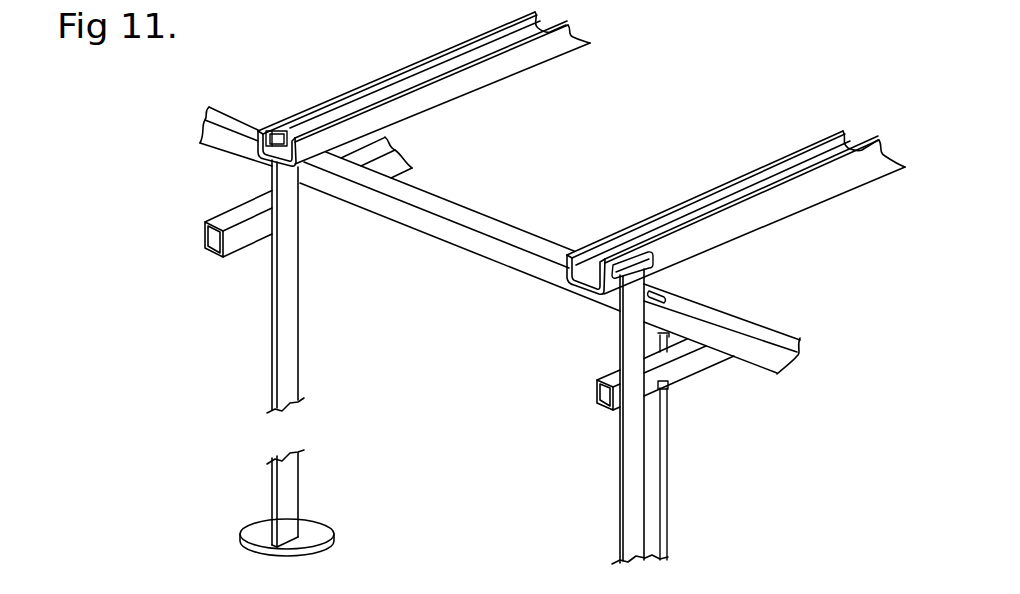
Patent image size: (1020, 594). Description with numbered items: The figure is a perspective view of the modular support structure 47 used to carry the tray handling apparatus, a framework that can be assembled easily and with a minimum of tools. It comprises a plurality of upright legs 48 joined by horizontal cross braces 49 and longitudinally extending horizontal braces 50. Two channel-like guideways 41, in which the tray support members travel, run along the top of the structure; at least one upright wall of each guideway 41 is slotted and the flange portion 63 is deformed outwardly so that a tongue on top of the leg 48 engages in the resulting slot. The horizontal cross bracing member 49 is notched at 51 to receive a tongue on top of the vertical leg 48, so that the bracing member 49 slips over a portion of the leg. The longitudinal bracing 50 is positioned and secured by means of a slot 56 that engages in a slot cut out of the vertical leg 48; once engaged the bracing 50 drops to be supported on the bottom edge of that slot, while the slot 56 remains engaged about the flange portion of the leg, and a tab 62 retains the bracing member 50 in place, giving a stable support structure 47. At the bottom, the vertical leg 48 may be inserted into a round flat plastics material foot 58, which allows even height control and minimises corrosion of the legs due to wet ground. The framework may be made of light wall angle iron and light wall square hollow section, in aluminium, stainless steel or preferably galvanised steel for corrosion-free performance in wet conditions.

The guideway 41 is at (492, 73).
The support structure 47 is at (483, 350).
The upright leg 48 is at (285, 322).
The horizontal cross brace 49 is at (490, 222).
The longitudinally extending horizontal brace 50 is at (317, 202).
The notch 51 is at (655, 295).
The slot 56 is at (652, 357).
The foot 58 is at (317, 537).
The tab 62 is at (668, 385).
The deformed portion 63 is at (633, 277).